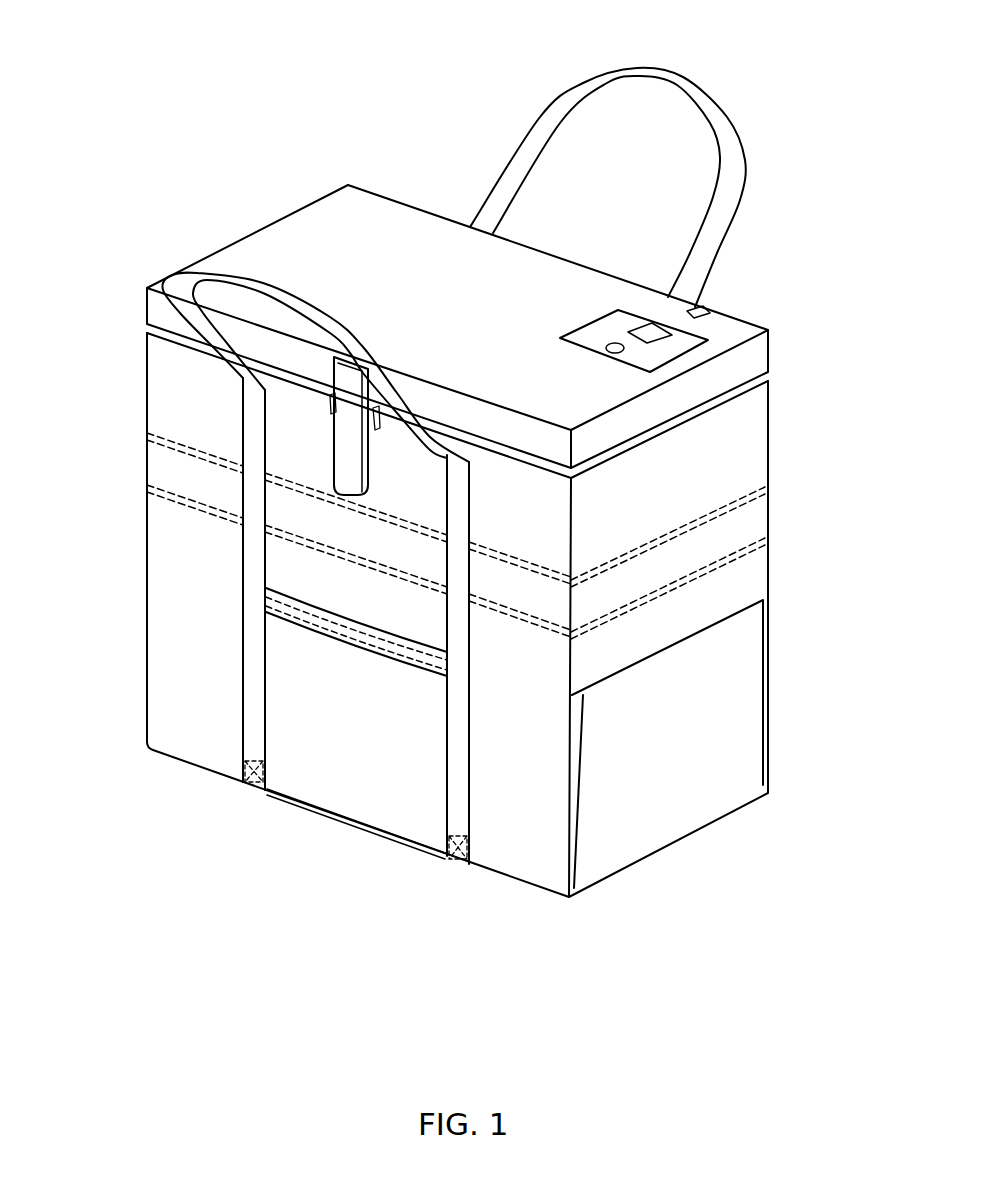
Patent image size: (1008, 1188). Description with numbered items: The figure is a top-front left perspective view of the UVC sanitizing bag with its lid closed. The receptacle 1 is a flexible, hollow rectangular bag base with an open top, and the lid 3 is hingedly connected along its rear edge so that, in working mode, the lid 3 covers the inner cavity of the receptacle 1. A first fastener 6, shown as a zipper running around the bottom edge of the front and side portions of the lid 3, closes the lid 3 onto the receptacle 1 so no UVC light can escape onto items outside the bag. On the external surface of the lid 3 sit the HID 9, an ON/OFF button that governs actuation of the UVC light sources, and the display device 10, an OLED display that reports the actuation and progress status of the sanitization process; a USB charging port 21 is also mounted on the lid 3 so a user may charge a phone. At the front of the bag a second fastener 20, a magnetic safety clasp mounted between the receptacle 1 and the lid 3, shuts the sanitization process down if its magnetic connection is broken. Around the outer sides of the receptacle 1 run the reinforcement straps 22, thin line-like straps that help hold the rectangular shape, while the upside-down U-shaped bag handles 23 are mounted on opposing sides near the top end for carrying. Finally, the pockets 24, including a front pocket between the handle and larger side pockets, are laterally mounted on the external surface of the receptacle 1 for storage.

The receptacle 1 is at (157, 628).
The lid 3 is at (358, 198).
The first fastener 6 is at (769, 378).
The human interface device (HID) 9 is at (612, 354).
The display device 10 is at (623, 311).
The second fastener 20 is at (352, 420).
The USB charging port 21 is at (704, 308).
The plurality of reinforcement straps 22 is at (152, 488).
The plurality of bag handles 23 is at (714, 96).
The plurality of pockets 24 is at (404, 638).